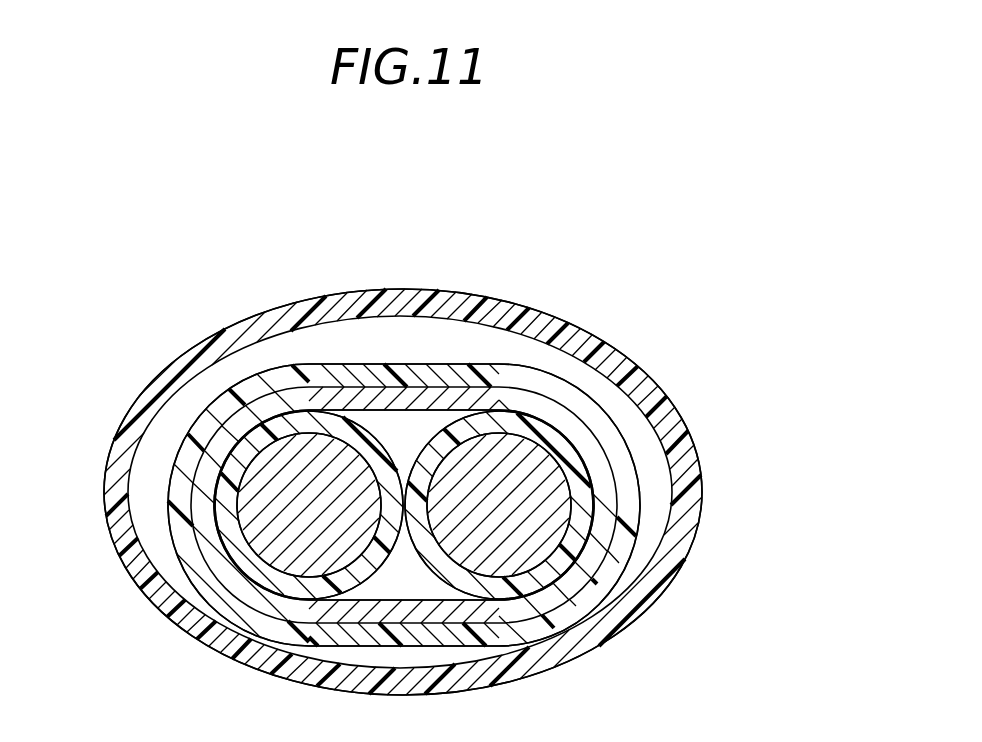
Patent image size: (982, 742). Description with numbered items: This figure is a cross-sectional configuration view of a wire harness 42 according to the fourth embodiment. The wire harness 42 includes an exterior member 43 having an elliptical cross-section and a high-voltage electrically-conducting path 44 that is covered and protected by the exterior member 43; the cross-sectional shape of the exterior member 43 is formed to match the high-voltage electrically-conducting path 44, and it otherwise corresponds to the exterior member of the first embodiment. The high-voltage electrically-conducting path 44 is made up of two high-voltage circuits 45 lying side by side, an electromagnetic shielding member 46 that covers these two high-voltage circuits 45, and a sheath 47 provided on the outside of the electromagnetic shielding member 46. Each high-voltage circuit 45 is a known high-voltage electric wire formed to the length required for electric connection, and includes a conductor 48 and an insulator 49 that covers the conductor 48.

The wire harness 42 is at (592, 165).
The exterior member 43 is at (553, 312).
The high-voltage electrically-conducting path 44 is at (553, 371).
The high-voltage circuit 45 is at (259, 212).
The electromagnetic shielding member 46 is at (413, 400).
The sheath 47 is at (478, 378).
The conductor 48 is at (273, 462).
The insulator 49 is at (298, 423).